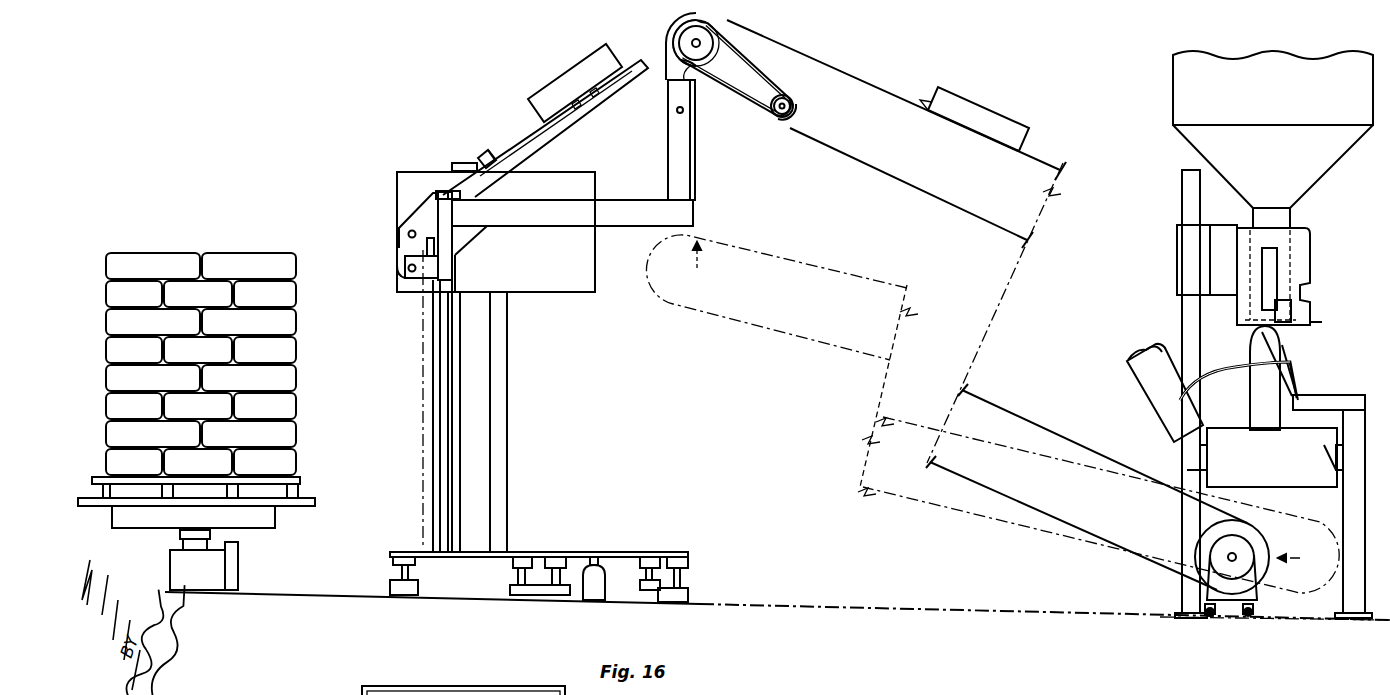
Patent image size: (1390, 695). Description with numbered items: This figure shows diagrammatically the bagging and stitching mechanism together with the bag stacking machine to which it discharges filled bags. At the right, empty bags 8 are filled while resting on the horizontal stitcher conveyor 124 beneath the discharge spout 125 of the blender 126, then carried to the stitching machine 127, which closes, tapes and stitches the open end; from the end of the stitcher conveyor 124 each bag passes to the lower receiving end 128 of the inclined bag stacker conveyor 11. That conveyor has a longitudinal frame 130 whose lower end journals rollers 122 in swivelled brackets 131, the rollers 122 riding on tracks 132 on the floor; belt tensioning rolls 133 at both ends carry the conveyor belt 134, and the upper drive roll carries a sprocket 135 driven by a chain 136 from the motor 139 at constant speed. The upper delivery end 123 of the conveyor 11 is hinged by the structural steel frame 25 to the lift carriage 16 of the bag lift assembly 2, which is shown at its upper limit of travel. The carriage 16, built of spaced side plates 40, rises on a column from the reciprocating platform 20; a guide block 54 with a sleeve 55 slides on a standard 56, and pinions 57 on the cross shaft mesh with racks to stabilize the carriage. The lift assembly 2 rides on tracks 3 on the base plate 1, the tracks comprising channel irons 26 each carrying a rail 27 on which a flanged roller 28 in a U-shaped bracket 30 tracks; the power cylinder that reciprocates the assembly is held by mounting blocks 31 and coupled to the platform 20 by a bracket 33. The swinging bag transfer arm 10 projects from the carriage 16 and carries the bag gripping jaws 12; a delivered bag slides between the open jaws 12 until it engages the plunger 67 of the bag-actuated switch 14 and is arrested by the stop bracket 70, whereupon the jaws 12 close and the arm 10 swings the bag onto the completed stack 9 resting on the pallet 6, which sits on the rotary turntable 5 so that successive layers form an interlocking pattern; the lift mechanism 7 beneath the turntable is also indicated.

The base plate 1 is at (449, 600).
The bag lift assembly 2 is at (580, 330).
The tracks 3 is at (703, 598).
The rotary turntable 5 is at (318, 507).
The pallet 6 is at (300, 481).
The lift mechanism 7 is at (204, 560).
The bags 8 is at (284, 381).
The stack of bags 9 is at (268, 238).
The bag transfer arm 10 is at (577, 123).
The bag stacker conveyor 11 is at (858, 78).
The bag gripping jaws 12 is at (573, 66).
The bag-actuated switch 14 is at (482, 156).
The lift carriage 16 is at (585, 272).
The reciprocating platform 20 is at (630, 552).
The structural steel frame 25 is at (693, 172).
The channel irons 26 is at (395, 596).
The rail 27 is at (415, 578).
The flanged roller 28 is at (403, 552).
The U-shaped brackets 30 is at (392, 560).
The mounting blocks 31 is at (592, 590).
The bracket 33 is at (595, 562).
The side plates 40 is at (496, 232).
The guide block 54 is at (421, 284).
The sleeve 55 is at (447, 216).
The standard 56 is at (443, 402).
The pinions 57 is at (402, 262).
The plunger 67 is at (491, 150).
The stop bracket 70 is at (522, 160).
The rollers 122 is at (1243, 618).
The delivery end 123 is at (676, 18).
The stitcher conveyor 124 is at (1272, 457).
The discharge spout 125 is at (1293, 218).
The blender 126 is at (1273, 129).
The stitching machine 127 is at (1312, 268).
The receiving end 128 is at (1280, 514).
The longitudinal frame 130 is at (1086, 510).
The brackets 131 is at (1262, 595).
The tracks 132 is at (1310, 623).
The belt tensioning rolls 133 is at (734, 36).
The conveyor belt 134 is at (1022, 147).
The sprocket 135 is at (686, 62).
The chain 136 is at (768, 77).
The motor 139 is at (806, 103).